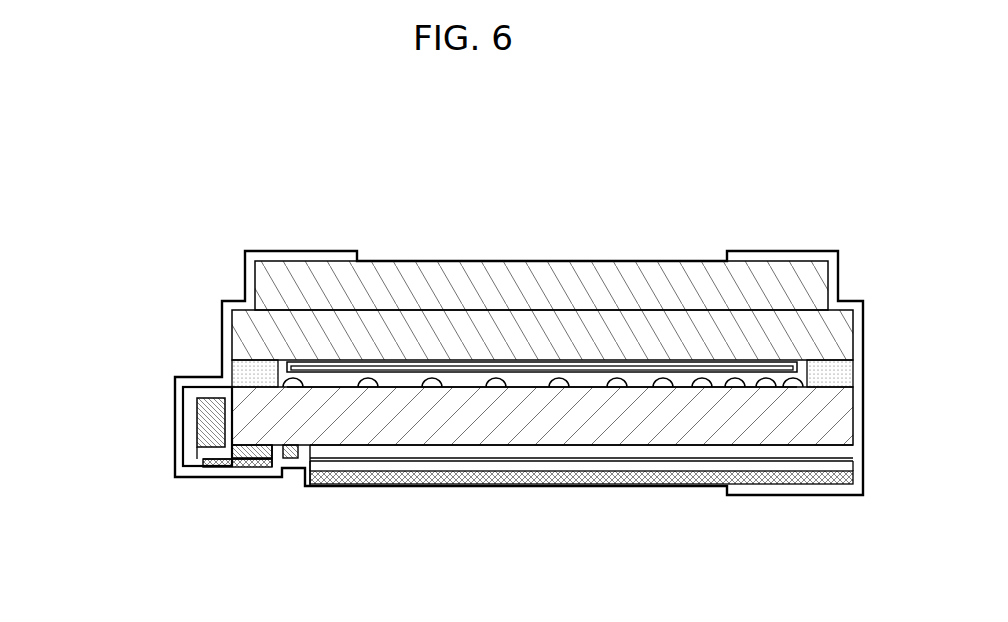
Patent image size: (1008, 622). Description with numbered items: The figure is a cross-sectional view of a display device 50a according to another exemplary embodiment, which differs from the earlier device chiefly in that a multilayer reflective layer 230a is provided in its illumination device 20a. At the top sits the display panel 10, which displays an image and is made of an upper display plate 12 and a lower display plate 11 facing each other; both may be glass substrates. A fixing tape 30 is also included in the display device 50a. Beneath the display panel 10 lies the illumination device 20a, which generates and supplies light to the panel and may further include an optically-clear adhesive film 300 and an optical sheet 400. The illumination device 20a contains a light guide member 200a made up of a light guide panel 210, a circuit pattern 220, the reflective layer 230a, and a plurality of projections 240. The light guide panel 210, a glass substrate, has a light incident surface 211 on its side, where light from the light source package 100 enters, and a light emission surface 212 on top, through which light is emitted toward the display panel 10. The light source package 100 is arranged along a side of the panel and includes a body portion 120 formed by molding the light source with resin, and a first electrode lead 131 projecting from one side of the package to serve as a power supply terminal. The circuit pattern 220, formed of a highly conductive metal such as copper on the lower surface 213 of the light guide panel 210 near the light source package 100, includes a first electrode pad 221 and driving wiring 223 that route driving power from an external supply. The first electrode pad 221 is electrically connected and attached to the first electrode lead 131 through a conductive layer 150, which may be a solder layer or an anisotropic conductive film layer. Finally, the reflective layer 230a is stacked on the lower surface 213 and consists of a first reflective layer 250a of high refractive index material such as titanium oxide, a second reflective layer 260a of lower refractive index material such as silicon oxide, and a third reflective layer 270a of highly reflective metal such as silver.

The display device 50a is at (603, 207).
The fixing tape 30 is at (295, 254).
The display panel 10 is at (478, 218).
The upper display plate 12 is at (433, 288).
The lower display plate 11 is at (486, 328).
The light emission surface 212 is at (678, 387).
The optical sheet 400 is at (294, 365).
The optically-clear adhesive film 300 is at (224, 370).
The illumination device 20a is at (108, 340).
The light guide member 200a is at (249, 401).
The light source package 100 is at (172, 427).
The body portion 120 is at (190, 452).
The first electrode lead 131 is at (202, 463).
The conductive layer 150 is at (244, 460).
The light incident surface 211 is at (228, 449).
The first electrode pad 221 is at (256, 457).
The driving wiring 223 is at (292, 456).
The circuit pattern 220 is at (297, 536).
The first reflective layer 250a is at (380, 453).
The second reflective layer 260a is at (433, 466).
The third reflective layer 270a is at (490, 478).
The reflective layer 230a is at (481, 546).
The projections 240 is at (560, 381).
The lower surface 213 is at (618, 448).
The light guide panel 210 is at (683, 432).